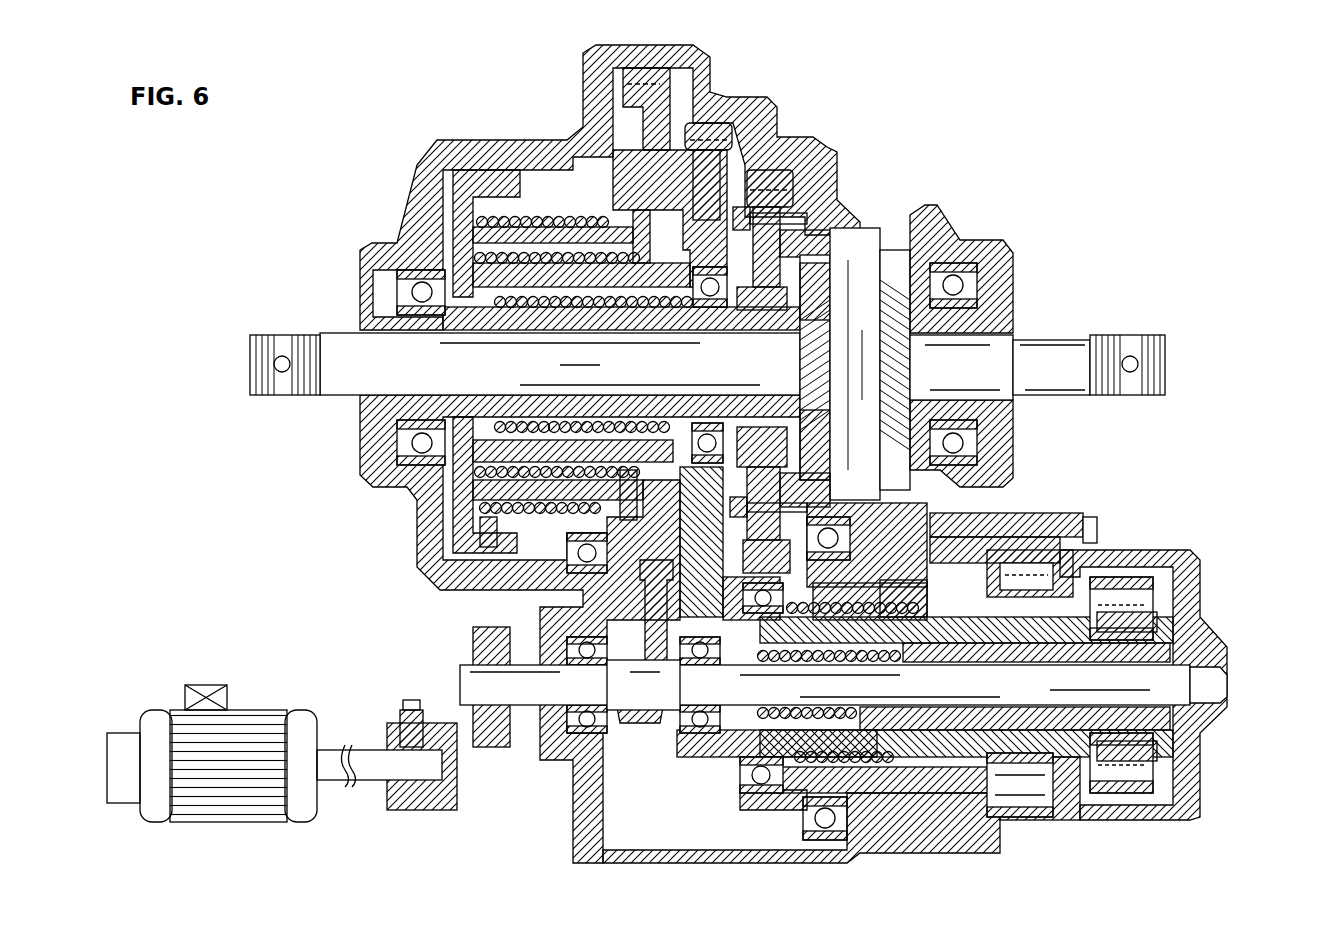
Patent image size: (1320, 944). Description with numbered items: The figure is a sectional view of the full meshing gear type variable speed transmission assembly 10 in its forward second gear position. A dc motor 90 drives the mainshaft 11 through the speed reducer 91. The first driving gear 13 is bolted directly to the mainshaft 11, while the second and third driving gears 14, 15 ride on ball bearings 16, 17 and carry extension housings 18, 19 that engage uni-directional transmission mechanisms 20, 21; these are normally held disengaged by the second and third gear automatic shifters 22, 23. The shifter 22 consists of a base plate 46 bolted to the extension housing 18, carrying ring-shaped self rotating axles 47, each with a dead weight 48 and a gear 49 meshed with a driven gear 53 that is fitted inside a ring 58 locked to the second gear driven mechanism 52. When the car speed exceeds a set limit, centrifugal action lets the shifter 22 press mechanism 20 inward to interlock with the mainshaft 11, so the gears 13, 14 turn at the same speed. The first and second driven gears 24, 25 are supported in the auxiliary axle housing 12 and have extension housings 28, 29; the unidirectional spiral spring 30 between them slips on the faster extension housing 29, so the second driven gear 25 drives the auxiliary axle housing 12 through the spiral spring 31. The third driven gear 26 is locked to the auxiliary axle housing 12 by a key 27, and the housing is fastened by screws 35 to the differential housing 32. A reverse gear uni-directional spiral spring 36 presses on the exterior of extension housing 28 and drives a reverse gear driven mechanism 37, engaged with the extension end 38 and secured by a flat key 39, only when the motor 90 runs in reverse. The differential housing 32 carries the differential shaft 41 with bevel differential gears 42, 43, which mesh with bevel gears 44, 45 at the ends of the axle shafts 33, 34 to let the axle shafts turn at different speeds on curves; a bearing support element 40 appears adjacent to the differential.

The variable speed transmission assembly 10 is at (415, 135).
The mainshaft 11 is at (530, 710).
The auxiliary axle housing 12 is at (372, 292).
The first driving gear 13 is at (637, 725).
The second driving gear 14 is at (703, 740).
The third driving gear 15 is at (780, 805).
The ball bearing 16 is at (680, 735).
The ball bearing 17 is at (760, 790).
The extension housing 18 is at (760, 745).
The extension housing 19 is at (963, 780).
The uni-directional transmission mechanism 20 is at (752, 712).
The uni-directional transmission mechanism 21 is at (868, 765).
The second gear automatic shifter 22 is at (1165, 592).
The third gear automatic shifter 23 is at (1070, 795).
The first driven gear 24 is at (628, 80).
The second driven gear 25 is at (712, 135).
The third driven gear 26 is at (745, 210).
The key 27 is at (820, 300).
The extension housing 28 is at (475, 230).
The extension housing 29 is at (470, 262).
The unidirectional spiral spring 30 is at (420, 515).
The spiral spring 31 is at (548, 300).
The differential housing 32 is at (920, 250).
The axle shaft 33 is at (332, 397).
The axle shaft 34 is at (1060, 342).
The screws 35 is at (718, 265).
The reverse gear uni-directional spiral spring 36 is at (560, 553).
The reverse gear driven mechanism 37 is at (465, 467).
The extension end 38 is at (485, 530).
The flat key 39 is at (405, 292).
The bearing housing 40 is at (960, 242).
The differential shaft 41 is at (860, 235).
The bevel differential gear 42 is at (893, 245).
The bevel differential gear 43 is at (925, 510).
The bevel gear 44 is at (800, 365).
The bevel gear 45 is at (990, 345).
The base plate 46 is at (1125, 577).
The self rotating axle 47 is at (1157, 620).
The dead weight 48 is at (1157, 775).
The gear 49 is at (1157, 750).
The second gear driven mechanism 52 is at (957, 630).
The driven gear 53 is at (1160, 632).
The ring 58 is at (1160, 718).
The dc motor 90 is at (218, 823).
The speed reducer 91 is at (432, 695).